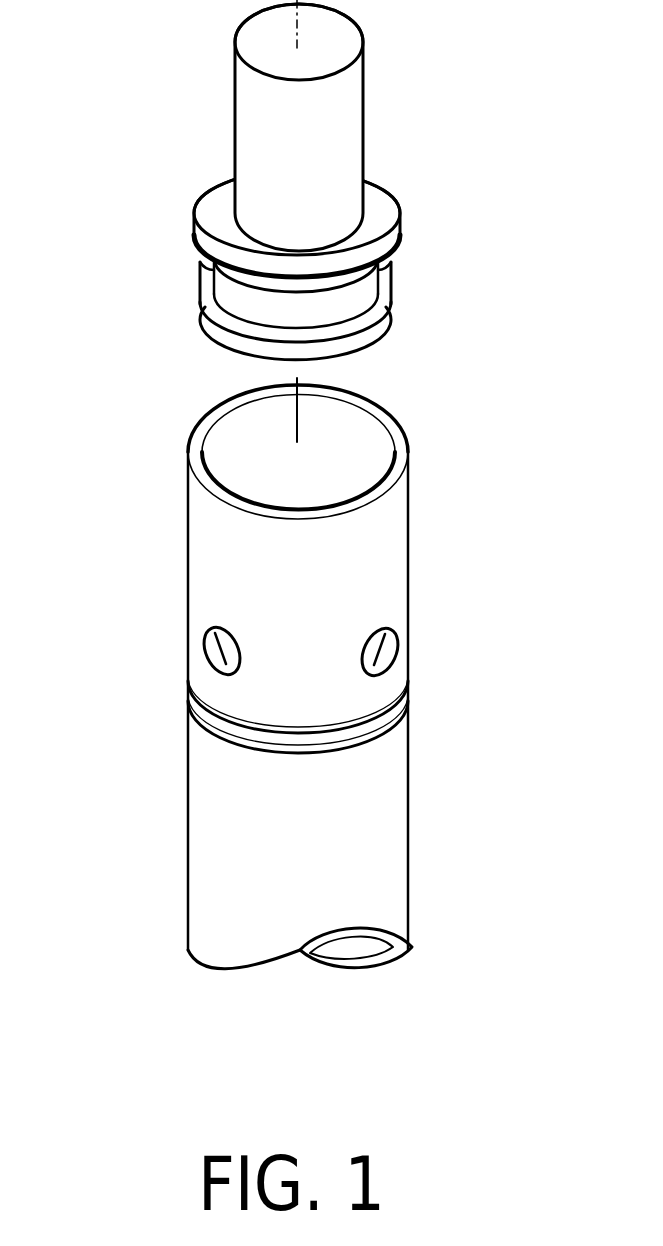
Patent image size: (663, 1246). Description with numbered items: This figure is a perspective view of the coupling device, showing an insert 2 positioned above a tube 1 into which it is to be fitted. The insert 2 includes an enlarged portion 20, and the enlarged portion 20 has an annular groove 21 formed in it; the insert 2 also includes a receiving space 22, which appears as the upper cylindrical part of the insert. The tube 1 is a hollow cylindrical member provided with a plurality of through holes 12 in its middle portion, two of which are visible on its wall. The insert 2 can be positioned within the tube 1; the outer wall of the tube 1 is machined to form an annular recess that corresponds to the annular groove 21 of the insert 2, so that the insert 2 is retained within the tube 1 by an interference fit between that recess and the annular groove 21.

The tube 1 is at (372, 835).
The through holes 12 is at (222, 651).
The insert 2 is at (330, 180).
The enlarged portion 20 is at (393, 208).
The annular groove 21 is at (413, 262).
The receiving space 22 is at (380, 112).